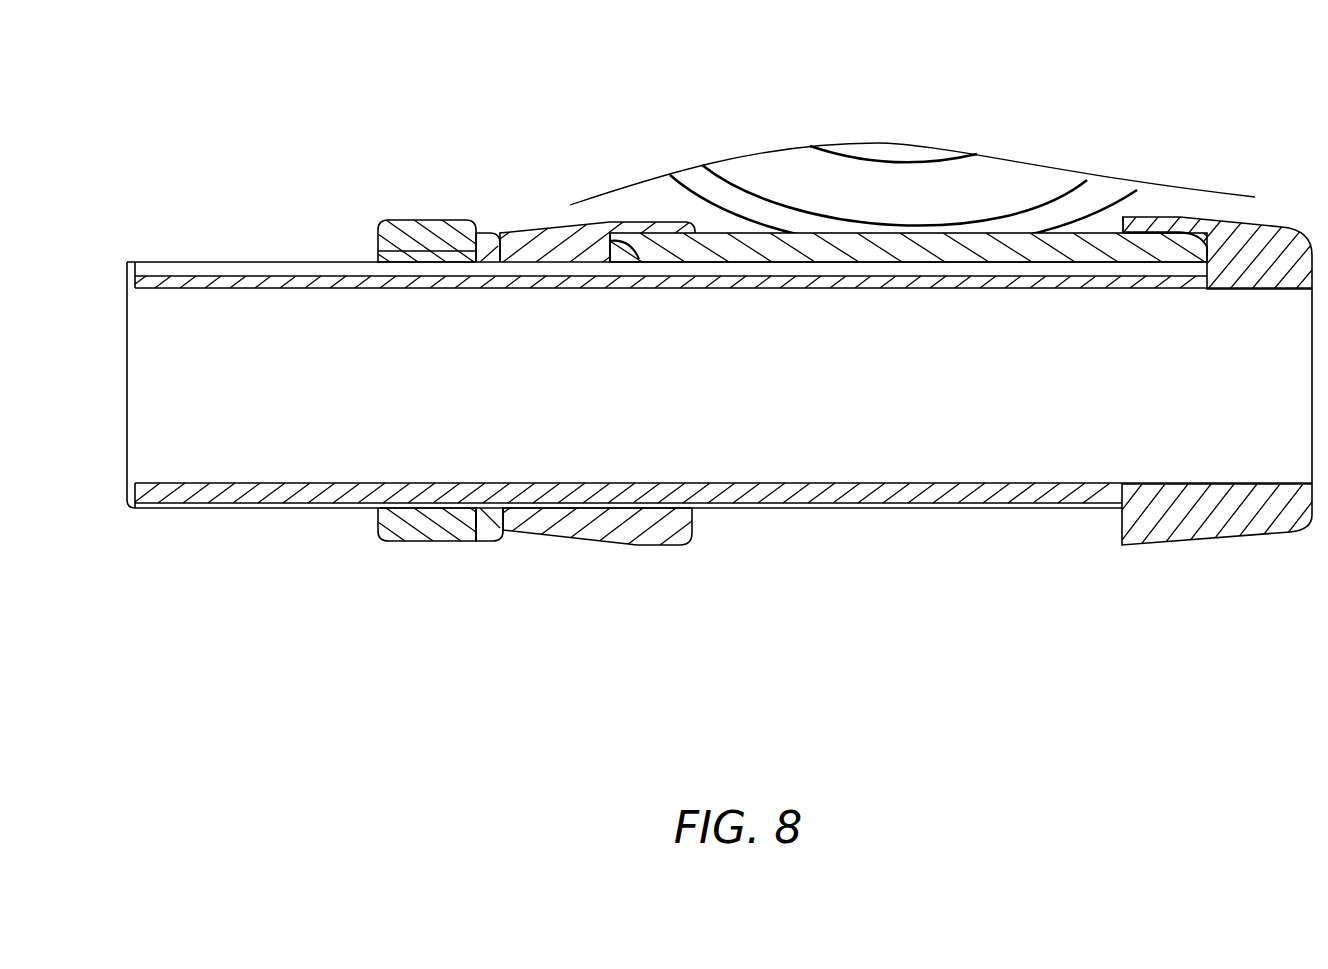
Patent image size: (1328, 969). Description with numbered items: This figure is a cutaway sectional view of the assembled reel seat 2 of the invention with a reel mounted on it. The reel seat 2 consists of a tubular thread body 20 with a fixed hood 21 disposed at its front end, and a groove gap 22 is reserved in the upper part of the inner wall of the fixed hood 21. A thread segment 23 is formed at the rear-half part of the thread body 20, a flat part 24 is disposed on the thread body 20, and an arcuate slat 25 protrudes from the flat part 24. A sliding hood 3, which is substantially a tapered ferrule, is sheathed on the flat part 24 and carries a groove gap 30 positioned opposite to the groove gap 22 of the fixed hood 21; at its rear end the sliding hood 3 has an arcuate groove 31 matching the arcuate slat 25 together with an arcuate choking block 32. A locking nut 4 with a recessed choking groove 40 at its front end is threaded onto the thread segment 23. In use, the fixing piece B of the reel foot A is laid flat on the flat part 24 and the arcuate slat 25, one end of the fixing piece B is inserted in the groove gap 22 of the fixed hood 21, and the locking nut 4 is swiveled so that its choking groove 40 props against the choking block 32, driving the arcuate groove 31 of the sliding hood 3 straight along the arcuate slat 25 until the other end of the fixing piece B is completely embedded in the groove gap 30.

The reel seat 2 is at (719, 372).
The thread body 20 is at (719, 439).
The fixed hood 21 is at (1192, 513).
The groove gap 22 is at (1222, 230).
The thread segment 23 is at (735, 515).
The flat part 24 is at (690, 287).
The arcuate slat 25 is at (843, 268).
The sliding hood 3 is at (607, 523).
The groove gap 30 is at (604, 236).
The arcuate groove 31 is at (480, 528).
The arcuate choking block 32 is at (486, 261).
The locking nut 4 is at (385, 526).
The choking groove 40 is at (498, 528).
The reel foot A is at (795, 168).
The fixing piece B is at (1102, 253).